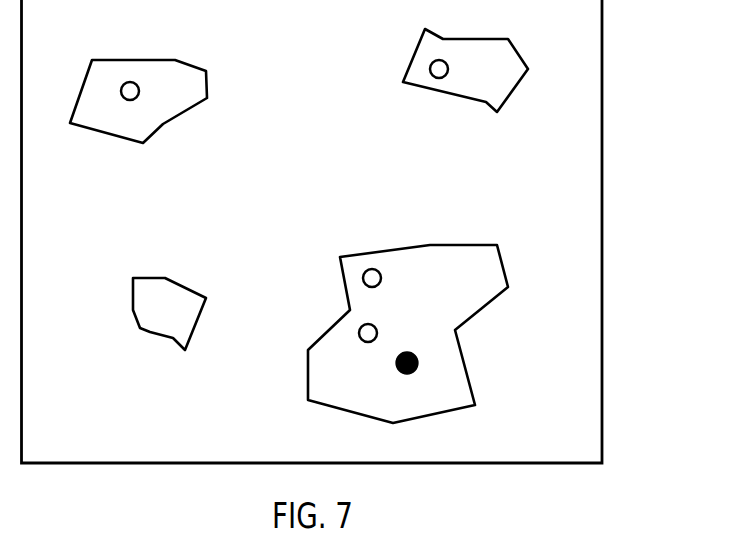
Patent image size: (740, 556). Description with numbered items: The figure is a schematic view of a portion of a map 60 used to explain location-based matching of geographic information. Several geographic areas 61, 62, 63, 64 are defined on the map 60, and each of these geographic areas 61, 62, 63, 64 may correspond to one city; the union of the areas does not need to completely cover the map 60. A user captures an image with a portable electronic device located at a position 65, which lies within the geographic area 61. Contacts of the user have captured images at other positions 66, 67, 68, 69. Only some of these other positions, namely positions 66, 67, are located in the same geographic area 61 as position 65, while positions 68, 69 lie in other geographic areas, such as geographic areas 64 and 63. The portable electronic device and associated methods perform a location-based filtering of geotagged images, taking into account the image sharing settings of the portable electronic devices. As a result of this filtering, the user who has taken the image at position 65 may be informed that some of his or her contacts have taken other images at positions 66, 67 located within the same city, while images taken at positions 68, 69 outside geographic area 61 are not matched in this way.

The map 60 is at (602, 448).
The geographic area 61 is at (475, 405).
The geographic area 62 is at (190, 341).
The geographic area 63 is at (503, 102).
The geographic area 64 is at (207, 98).
The position 65 is at (418, 363).
The position 66 is at (382, 278).
The position 67 is at (378, 333).
The position 68 is at (140, 91).
The position 69 is at (449, 69).